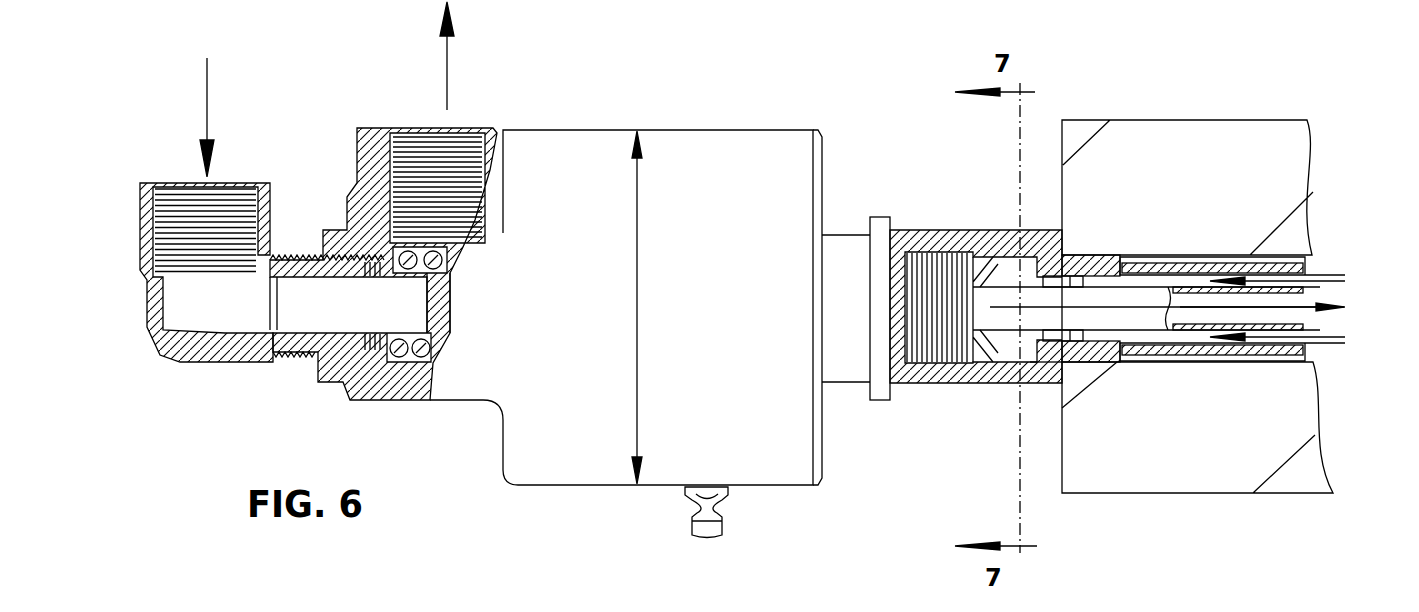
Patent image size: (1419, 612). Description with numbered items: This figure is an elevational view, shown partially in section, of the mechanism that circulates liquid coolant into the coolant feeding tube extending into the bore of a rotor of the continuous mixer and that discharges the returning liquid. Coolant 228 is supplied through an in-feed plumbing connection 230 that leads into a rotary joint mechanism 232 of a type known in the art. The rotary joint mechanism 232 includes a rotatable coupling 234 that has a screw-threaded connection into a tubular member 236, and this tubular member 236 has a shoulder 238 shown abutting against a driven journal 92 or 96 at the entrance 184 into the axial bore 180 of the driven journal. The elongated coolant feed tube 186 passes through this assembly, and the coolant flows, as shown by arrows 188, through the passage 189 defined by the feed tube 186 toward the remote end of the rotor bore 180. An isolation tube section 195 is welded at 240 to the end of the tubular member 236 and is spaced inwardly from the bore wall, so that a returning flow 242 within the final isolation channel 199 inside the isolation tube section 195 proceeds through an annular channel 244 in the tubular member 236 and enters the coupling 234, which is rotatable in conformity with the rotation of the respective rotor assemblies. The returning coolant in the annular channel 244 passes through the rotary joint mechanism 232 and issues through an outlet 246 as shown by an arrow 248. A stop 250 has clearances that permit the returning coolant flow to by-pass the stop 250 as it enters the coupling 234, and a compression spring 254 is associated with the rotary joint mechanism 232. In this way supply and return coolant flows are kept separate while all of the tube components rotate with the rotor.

The coolant 228 is at (213, 90).
The arrow 248 is at (452, 53).
The in-feed plumbing connection 230 is at (272, 207).
The rotary joint mechanism 232 is at (671, 130).
The outlet 246 is at (480, 133).
The compression spring 254 is at (383, 378).
The rotatable coupling 234 is at (948, 245).
The tubular member 236 is at (1020, 233).
The stop 250 is at (975, 362).
The annular channel 244 is at (1023, 362).
The axial bore 180 is at (1226, 258).
The passage 189 is at (1318, 312).
The arrows 188 is at (1340, 300).
The entrance 184 is at (1112, 256).
The shoulder 238 is at (1072, 252).
The isolation tube section 195 is at (1280, 268).
The isolation channel 199 is at (1190, 268).
The coolant feed tube 186 is at (1172, 342).
The returning flow 242 is at (1314, 276).
The driven journal 92 is at (1192, 132).
The driven journal 96 is at (1197, 284).
The weld 240 is at (1119, 364).